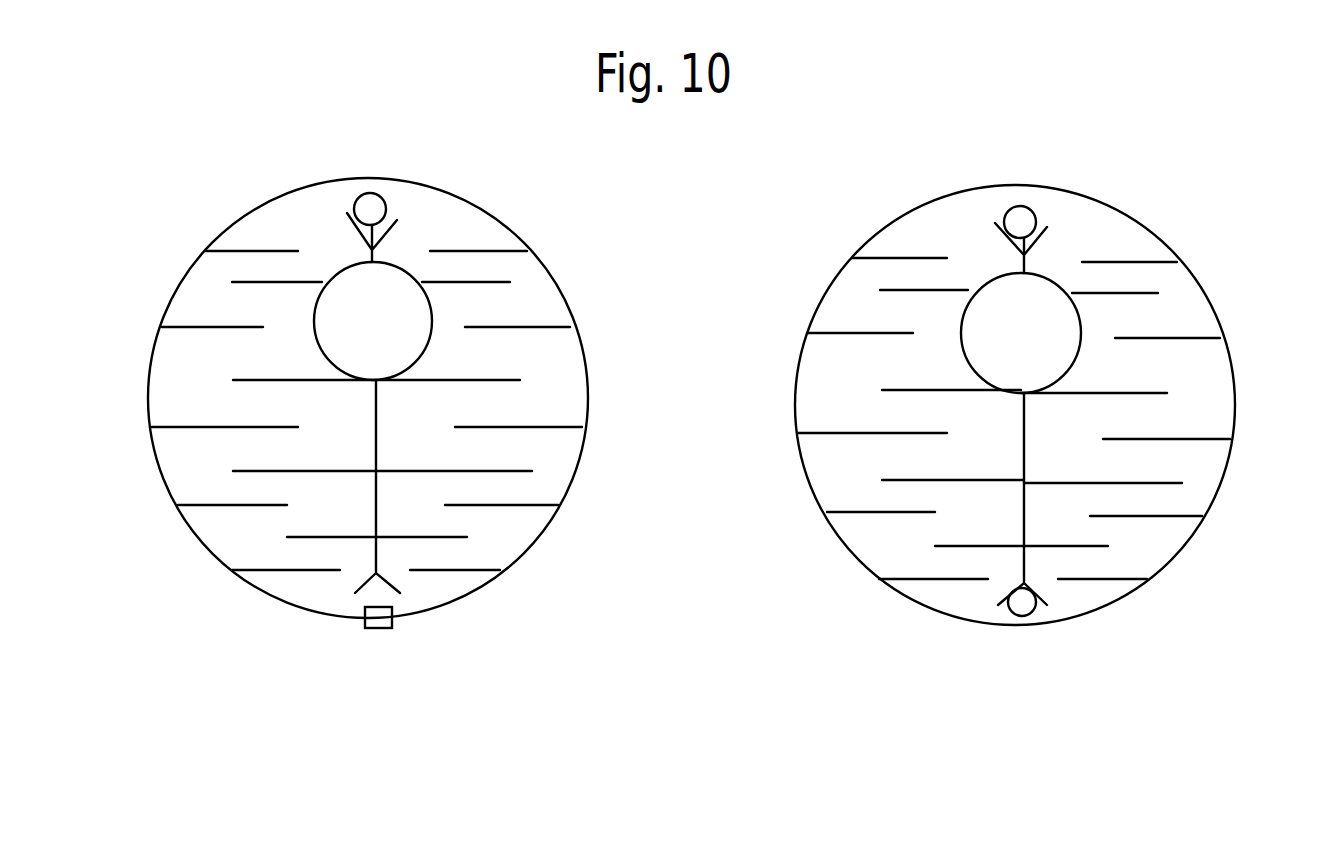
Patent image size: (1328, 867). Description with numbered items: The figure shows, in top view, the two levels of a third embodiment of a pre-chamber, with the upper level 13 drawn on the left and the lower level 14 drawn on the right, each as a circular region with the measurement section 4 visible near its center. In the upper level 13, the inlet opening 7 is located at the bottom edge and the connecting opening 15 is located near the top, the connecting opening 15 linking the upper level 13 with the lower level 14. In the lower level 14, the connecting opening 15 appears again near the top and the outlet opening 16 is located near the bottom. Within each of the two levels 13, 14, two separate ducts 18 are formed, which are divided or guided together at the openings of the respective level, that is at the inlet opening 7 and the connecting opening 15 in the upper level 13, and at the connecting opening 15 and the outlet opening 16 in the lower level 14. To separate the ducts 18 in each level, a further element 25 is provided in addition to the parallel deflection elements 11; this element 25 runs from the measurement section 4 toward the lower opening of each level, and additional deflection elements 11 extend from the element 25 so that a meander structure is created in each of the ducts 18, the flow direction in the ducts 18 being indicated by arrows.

The measurement section 4 is at (347, 313).
The inlet opening 7 is at (377, 626).
The deflection elements 11 is at (222, 427).
The upper level 13 is at (476, 600).
The lower level 14 is at (857, 570).
The connecting opening 15 is at (367, 205).
The outlet opening 16 is at (1016, 604).
The ducts 18 is at (193, 367).
The element 25 is at (376, 430).